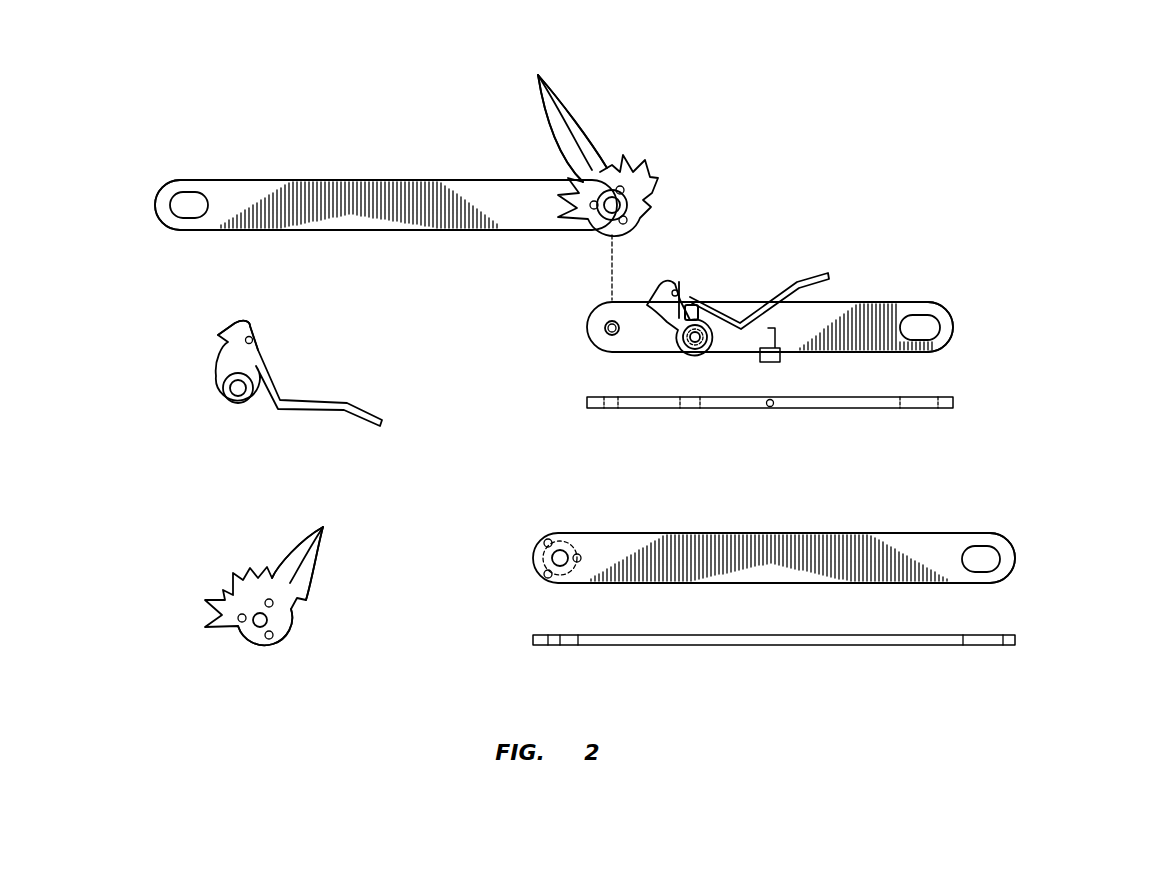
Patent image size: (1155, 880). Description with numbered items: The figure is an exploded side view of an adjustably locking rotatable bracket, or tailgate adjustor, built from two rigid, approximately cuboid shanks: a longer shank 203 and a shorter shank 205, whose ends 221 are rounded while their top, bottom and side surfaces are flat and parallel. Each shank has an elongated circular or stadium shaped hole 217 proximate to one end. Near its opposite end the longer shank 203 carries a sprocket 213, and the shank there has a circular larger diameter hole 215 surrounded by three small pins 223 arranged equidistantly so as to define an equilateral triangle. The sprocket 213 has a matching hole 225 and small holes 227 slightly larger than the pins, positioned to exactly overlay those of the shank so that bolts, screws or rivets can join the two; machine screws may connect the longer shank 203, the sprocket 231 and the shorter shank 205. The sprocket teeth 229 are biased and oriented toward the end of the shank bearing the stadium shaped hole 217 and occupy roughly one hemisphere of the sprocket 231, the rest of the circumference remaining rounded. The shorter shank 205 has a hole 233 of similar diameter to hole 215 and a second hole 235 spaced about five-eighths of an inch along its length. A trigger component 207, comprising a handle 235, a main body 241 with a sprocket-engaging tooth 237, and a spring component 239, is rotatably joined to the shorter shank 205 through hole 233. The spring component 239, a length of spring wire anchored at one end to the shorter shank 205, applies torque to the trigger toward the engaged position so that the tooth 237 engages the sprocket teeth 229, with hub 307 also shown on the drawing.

The longer shank 203 is at (352, 175).
The shorter shank 205 is at (876, 300).
The trigger component 207 is at (676, 278).
The sprocket 213 is at (625, 138).
The circular larger diameter hole 215 is at (560, 562).
The elongated circular or stadium shaped hole 217 is at (192, 205).
The ends of the shanks 221 is at (160, 207).
The small pins 223 is at (577, 557).
The hole 225 is at (257, 625).
The small holes 227 is at (256, 613).
The teeth 229 is at (538, 76).
The sprocket 231 is at (637, 223).
The hole 233 is at (604, 330).
The hole / handle 235 is at (767, 305).
The sprocket-engaging tooth 237 is at (651, 297).
The spring component 239 is at (692, 290).
The main body 241 is at (235, 362).
The pawl hub 307 is at (248, 413).